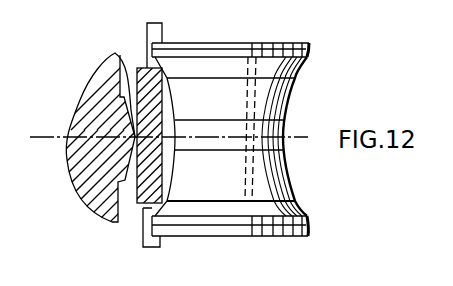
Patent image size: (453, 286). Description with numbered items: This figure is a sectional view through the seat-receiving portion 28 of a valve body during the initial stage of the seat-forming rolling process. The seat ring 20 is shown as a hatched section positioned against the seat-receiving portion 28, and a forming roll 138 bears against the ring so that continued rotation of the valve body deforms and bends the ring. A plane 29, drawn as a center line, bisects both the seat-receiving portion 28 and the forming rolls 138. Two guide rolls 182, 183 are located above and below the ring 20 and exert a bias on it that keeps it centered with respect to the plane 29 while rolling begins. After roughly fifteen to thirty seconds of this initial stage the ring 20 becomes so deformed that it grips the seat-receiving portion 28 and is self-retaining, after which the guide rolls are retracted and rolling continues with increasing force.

The seat ring 20 is at (160, 110).
The seat-receiving portion 28 is at (118, 51).
The plane 29 is at (45, 133).
The forming roll 138 is at (293, 97).
The guide roll 182 is at (161, 34).
The guide roll 183 is at (143, 240).